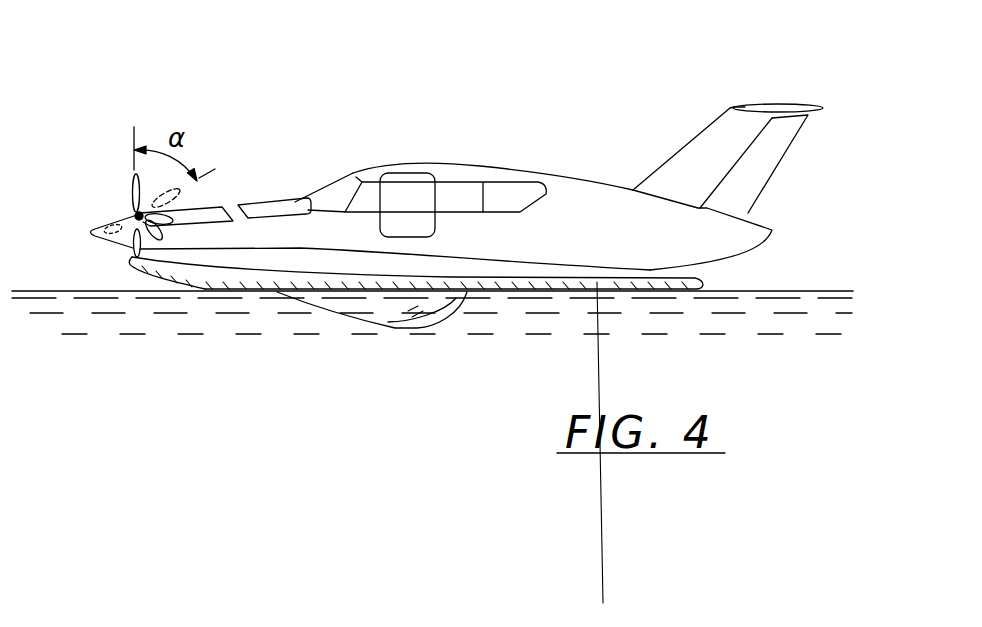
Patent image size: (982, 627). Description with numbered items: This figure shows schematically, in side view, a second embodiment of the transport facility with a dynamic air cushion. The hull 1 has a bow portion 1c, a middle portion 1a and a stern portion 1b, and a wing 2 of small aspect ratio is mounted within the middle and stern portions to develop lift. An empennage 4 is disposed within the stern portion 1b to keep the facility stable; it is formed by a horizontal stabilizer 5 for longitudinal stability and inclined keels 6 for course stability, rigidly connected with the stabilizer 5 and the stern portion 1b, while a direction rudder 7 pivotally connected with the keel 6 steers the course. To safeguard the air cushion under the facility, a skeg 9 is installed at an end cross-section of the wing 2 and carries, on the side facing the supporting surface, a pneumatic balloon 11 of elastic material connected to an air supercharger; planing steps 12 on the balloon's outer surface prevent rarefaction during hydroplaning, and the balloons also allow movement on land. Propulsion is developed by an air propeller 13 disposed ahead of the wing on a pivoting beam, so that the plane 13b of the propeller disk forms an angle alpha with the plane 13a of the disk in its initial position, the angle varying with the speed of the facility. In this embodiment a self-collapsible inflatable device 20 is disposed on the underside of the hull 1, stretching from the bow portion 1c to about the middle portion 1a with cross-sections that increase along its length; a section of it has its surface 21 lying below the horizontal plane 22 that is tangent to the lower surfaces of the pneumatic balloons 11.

The hull 1 is at (408, 140).
The middle portion 1a is at (467, 238).
The stern portion 1b is at (743, 233).
The bow portion 1c is at (242, 230).
The wing 2 is at (488, 282).
The empennage 4 is at (738, 94).
The horizontal stabilizer 5 is at (788, 105).
The inclined keel 6 is at (678, 163).
The direction rudder 7 is at (760, 162).
The skeg 9 is at (372, 260).
The pneumatic balloon 11 is at (205, 275).
The planing step 12 is at (545, 292).
The air propeller 13 is at (131, 193).
The plane of the propeller disk in initial position 13a is at (134, 127).
The plane of the propeller disk 13b is at (215, 169).
The self-collapsible inflatable device 20 is at (377, 303).
The surface of the inflatable device 21 is at (420, 328).
The horizontal plane 22 is at (747, 292).